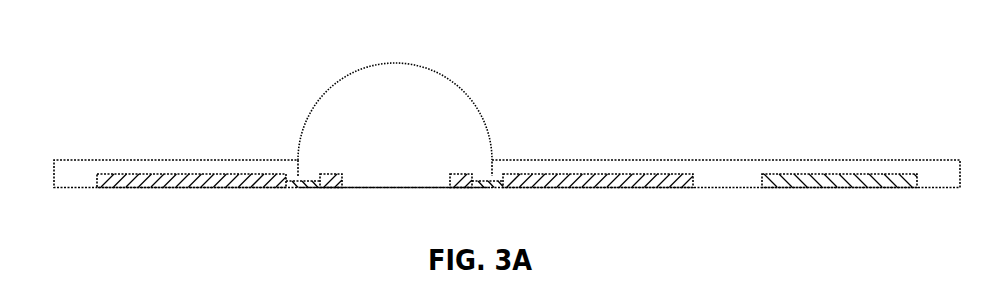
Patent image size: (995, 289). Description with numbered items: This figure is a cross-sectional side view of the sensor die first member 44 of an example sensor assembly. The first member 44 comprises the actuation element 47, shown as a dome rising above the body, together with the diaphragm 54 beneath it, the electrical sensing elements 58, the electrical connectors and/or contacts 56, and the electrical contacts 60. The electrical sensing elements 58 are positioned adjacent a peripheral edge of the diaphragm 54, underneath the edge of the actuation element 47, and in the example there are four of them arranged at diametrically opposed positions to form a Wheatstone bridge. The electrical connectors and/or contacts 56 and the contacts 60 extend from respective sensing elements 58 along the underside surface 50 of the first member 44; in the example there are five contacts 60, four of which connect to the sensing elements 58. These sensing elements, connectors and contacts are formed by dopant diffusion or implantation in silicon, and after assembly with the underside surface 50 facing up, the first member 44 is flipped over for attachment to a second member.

The sensor die first member 44 is at (570, 52).
The actuation element 47 is at (450, 90).
The underside surface 50 is at (75, 188).
The diaphragm 54 is at (395, 170).
The electrical connectors and/or contacts 56 is at (330, 175).
The electrical sensing elements 58 is at (303, 180).
The electrical contacts 60 is at (177, 183).